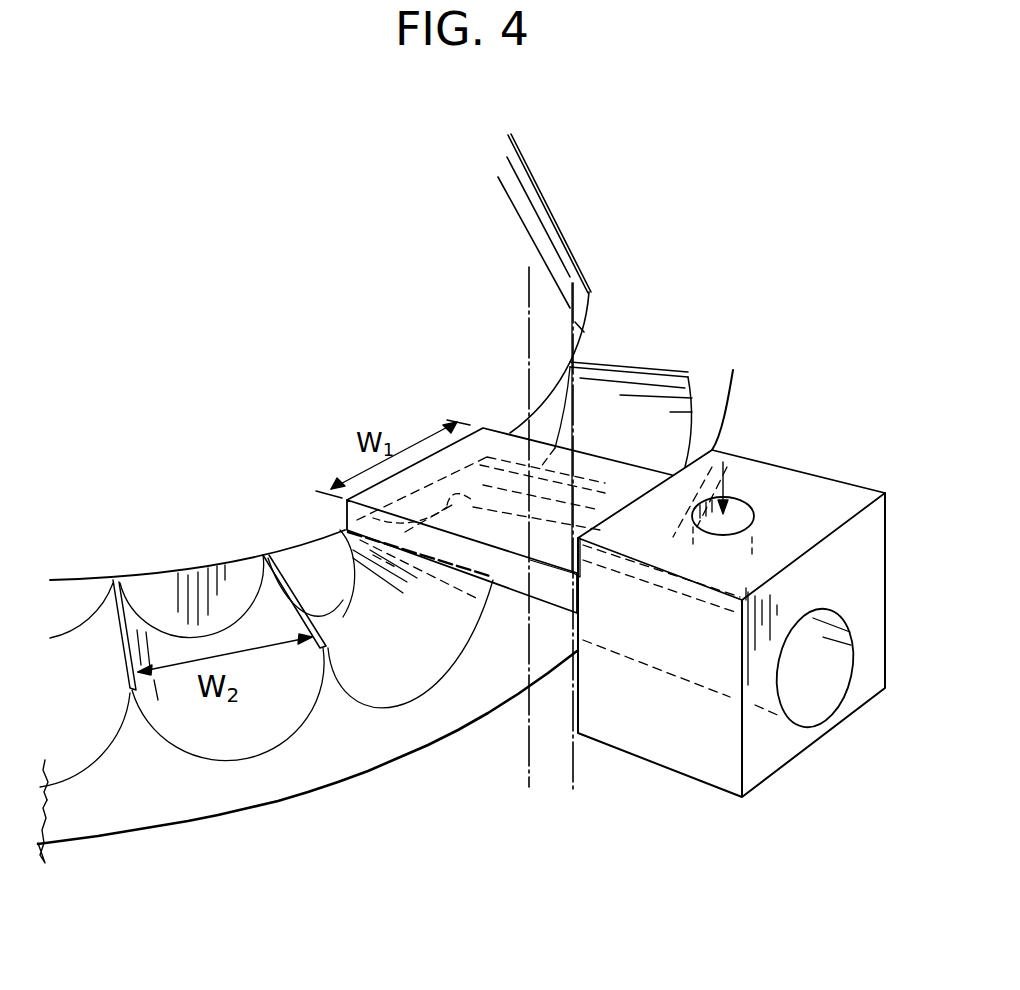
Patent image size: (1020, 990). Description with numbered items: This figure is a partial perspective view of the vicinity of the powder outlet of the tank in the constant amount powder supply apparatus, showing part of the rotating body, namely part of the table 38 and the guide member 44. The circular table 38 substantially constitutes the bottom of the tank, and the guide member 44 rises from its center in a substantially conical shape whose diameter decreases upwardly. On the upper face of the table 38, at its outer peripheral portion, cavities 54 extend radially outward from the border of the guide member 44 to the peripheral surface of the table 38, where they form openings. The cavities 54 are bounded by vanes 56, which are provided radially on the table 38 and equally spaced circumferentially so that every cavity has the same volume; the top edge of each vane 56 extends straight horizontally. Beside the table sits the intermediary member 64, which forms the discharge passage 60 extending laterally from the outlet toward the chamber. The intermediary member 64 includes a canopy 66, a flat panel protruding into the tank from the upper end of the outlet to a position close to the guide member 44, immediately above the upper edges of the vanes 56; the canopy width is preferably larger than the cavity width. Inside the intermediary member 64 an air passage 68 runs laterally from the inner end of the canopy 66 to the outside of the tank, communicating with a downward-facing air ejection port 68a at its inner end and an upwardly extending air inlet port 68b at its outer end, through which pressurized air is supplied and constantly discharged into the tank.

The circular table 38 is at (117, 806).
The guide member 44 is at (203, 357).
The cavities 54 is at (290, 700).
The vanes 56 is at (127, 667).
The discharge passage 60 is at (650, 667).
The intermediary member 64 is at (708, 760).
The canopy 66 is at (485, 428).
The air passage 68 is at (583, 535).
The air ejection port 68a is at (335, 508).
The air inlet port 68b is at (752, 517).